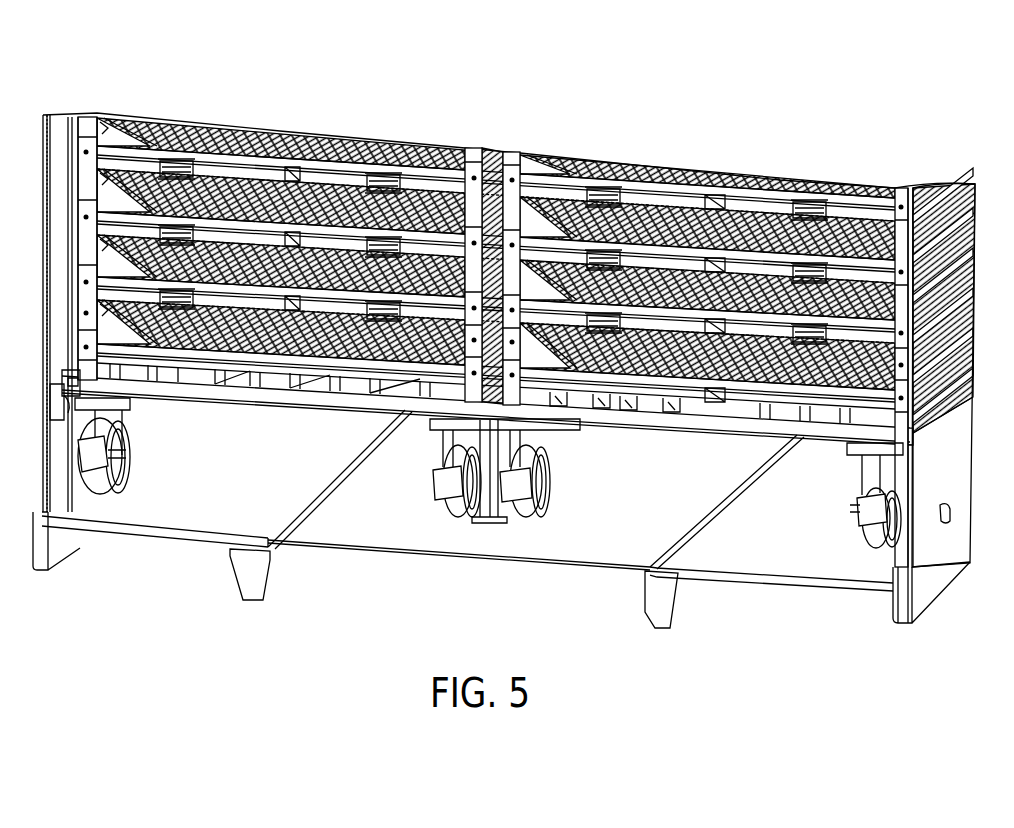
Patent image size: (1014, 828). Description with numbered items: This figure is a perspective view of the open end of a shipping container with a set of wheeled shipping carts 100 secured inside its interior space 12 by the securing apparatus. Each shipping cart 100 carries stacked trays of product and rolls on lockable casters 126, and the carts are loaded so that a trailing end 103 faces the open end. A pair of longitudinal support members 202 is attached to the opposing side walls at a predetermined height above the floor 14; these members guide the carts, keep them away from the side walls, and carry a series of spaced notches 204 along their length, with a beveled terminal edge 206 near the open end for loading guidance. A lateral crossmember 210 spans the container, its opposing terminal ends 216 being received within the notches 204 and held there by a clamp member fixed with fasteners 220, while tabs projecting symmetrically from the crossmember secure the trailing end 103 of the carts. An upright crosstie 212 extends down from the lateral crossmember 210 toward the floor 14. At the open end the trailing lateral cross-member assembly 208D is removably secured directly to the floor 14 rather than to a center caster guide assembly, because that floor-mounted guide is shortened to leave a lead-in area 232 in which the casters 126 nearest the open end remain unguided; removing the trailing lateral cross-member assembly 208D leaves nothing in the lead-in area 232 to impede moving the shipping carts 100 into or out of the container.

The interior space 12 is at (355, 107).
The wheeled shipping cart 100 is at (932, 161).
The trailing end 103 is at (655, 168).
The terminal end 216 is at (72, 377).
The center caster guide assembly 220 is at (62, 372).
The longitudinal support member 202 is at (967, 527).
The caster 126 is at (110, 488).
The trailing lateral cross-member assembly 208D is at (258, 400).
The floor 14 is at (340, 523).
The lateral crossmember 210 is at (395, 420).
The upright crosstie 212 is at (490, 490).
The lead-in area 232 is at (644, 513).
The beveled terminal edge 206 is at (863, 497).
The notch 204 is at (923, 463).